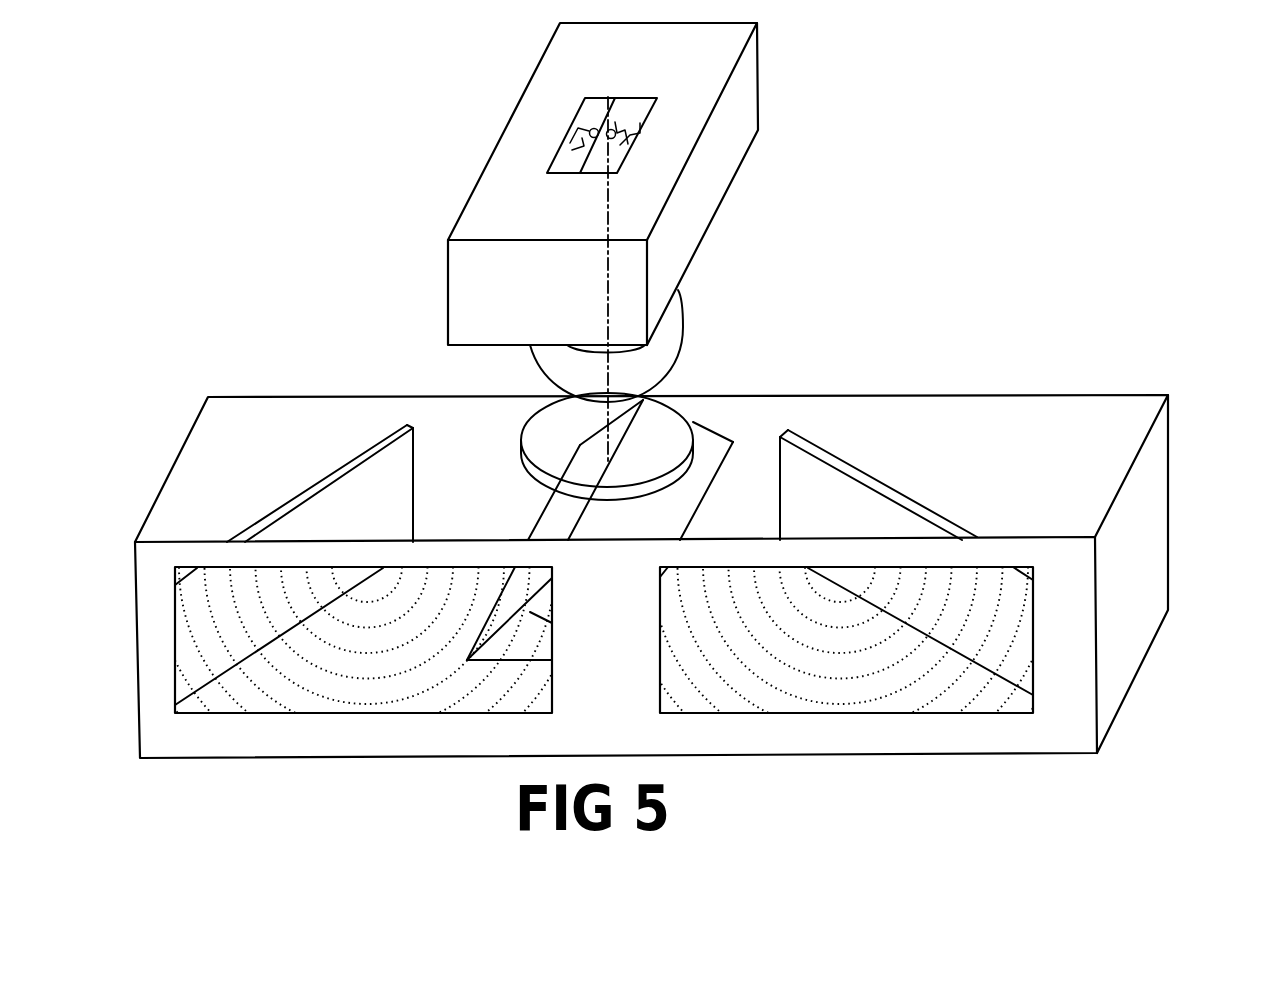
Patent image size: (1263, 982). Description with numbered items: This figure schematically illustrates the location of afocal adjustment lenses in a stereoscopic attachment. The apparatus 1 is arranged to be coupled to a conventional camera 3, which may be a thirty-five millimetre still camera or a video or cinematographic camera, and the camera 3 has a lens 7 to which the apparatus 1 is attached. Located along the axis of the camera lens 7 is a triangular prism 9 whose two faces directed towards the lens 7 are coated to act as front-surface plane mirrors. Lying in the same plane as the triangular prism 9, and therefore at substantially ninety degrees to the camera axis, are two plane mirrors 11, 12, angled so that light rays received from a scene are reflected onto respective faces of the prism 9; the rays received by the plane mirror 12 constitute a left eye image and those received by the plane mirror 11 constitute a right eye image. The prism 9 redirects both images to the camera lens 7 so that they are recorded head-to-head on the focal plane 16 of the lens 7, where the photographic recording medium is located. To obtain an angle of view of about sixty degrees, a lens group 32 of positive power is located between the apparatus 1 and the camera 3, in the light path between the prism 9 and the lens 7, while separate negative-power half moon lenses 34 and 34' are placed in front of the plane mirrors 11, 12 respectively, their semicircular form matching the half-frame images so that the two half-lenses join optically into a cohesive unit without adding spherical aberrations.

The apparatus 1 is at (1157, 552).
The camera 3 is at (750, 103).
The lens 7 is at (672, 358).
The triangular prism 9 is at (715, 460).
The plane mirror 11 is at (350, 498).
The plane mirror 12 is at (857, 503).
The focal plane 16 is at (622, 97).
The lens group 32 is at (530, 407).
The half moon lens 34 is at (840, 569).
The half moon lens 34' is at (367, 572).